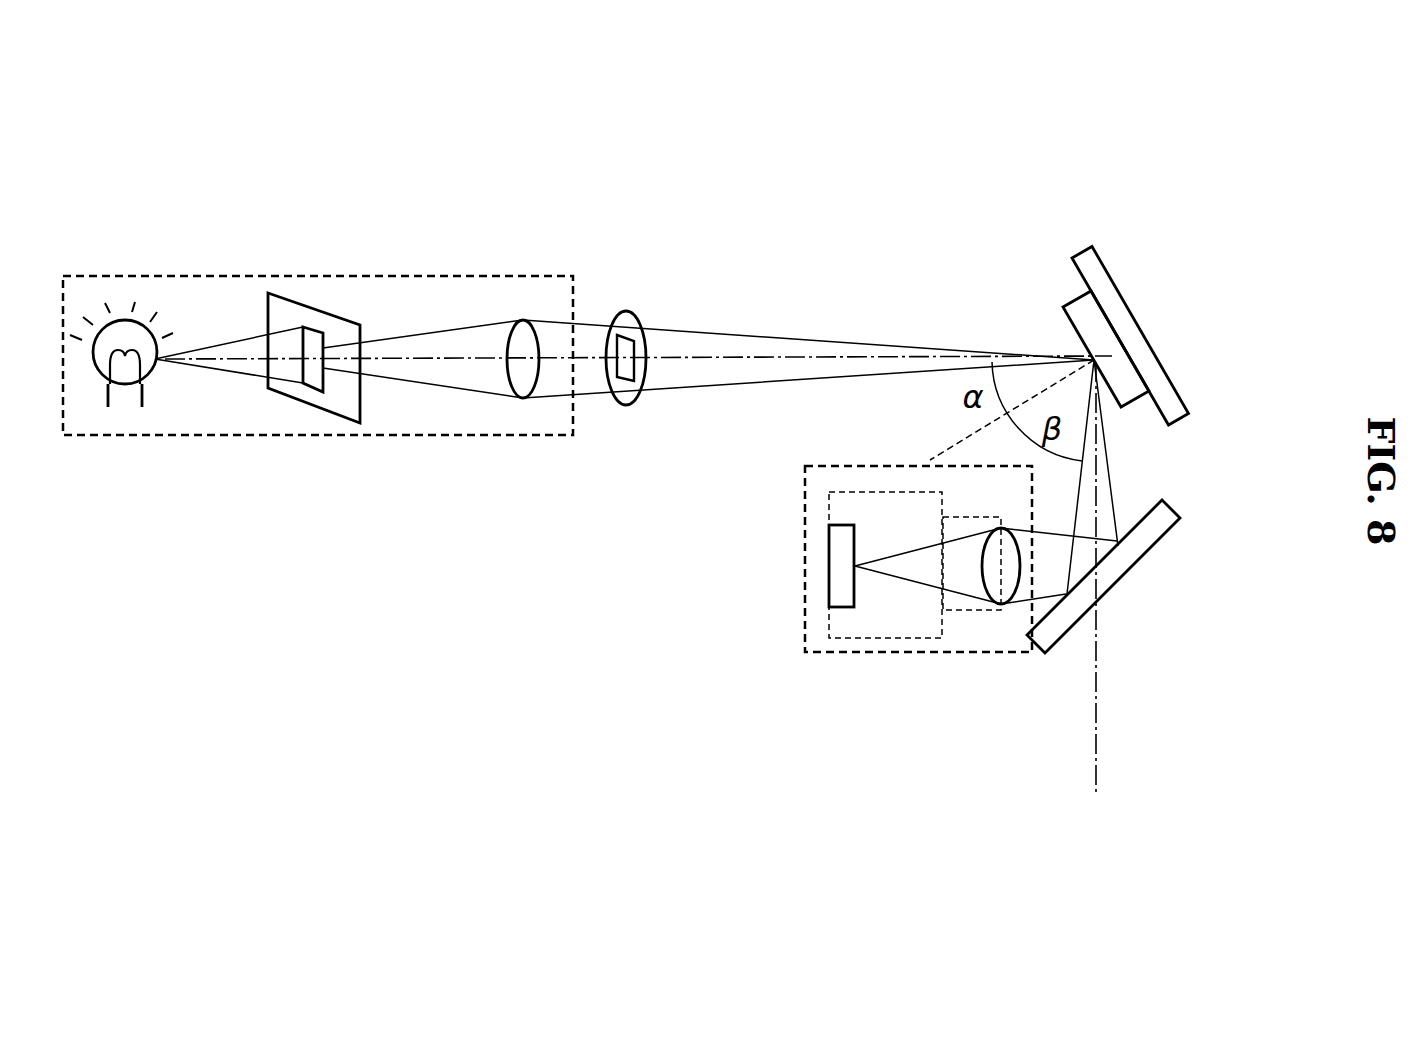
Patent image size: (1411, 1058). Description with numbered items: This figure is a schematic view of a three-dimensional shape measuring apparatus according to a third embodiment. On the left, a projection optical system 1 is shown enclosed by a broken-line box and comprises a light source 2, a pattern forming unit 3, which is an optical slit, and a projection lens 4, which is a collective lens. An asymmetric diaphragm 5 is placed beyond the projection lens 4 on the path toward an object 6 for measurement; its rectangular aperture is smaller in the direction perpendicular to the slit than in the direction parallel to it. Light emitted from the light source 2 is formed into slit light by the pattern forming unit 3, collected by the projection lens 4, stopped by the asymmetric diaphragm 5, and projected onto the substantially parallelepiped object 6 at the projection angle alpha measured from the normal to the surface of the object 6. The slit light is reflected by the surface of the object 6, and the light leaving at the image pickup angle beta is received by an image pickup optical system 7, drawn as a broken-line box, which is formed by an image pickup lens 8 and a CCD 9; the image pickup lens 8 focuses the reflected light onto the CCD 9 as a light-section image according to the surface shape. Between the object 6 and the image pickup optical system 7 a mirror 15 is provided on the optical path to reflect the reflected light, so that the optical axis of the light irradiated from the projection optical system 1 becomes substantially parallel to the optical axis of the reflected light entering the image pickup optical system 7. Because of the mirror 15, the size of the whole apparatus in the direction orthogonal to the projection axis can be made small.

The projection optical system 1 is at (228, 274).
The light source 2 is at (125, 407).
The pattern forming unit 3 is at (307, 403).
The projection lens 4 is at (523, 397).
The asymmetric diaphragm 5 is at (630, 403).
The object for measurement 6 is at (1130, 388).
The image pickup optical system 7 is at (803, 530).
The image pickup lens 8 is at (983, 593).
The CCD 9 is at (843, 607).
The mirror 15 is at (1118, 575).